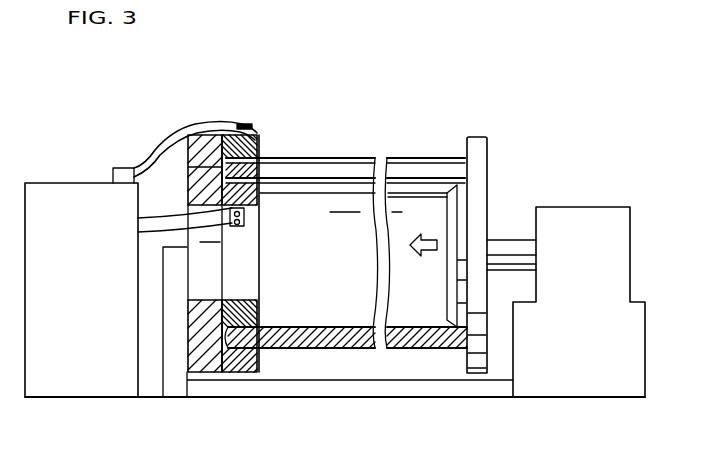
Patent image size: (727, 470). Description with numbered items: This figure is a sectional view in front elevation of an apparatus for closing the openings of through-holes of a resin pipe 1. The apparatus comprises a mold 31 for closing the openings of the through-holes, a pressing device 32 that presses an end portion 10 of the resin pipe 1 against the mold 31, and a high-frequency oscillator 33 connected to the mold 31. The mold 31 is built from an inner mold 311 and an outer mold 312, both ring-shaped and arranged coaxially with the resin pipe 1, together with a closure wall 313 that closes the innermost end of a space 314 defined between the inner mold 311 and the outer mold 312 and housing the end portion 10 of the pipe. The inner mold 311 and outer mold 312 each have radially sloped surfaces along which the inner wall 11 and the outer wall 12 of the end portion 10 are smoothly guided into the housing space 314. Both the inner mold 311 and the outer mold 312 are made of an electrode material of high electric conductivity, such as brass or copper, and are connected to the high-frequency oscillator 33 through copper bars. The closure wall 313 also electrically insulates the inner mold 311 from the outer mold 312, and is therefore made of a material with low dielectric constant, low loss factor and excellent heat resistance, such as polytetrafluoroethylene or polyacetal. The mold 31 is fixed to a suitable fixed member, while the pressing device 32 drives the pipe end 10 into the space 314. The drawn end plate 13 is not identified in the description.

The resin pipe 1 is at (335, 350).
The end portion 10 is at (207, 238).
The inner wall 11 is at (372, 160).
The outer wall 12 is at (340, 158).
The end plate 13 is at (427, 159).
The mold 31 is at (365, 68).
The inner mold 311 is at (287, 157).
The outer mold 312 is at (252, 156).
The closure wall 313 is at (205, 133).
The space 314 is at (180, 165).
The pressing device 32 is at (570, 204).
The high-frequency oscillator 33 is at (58, 178).